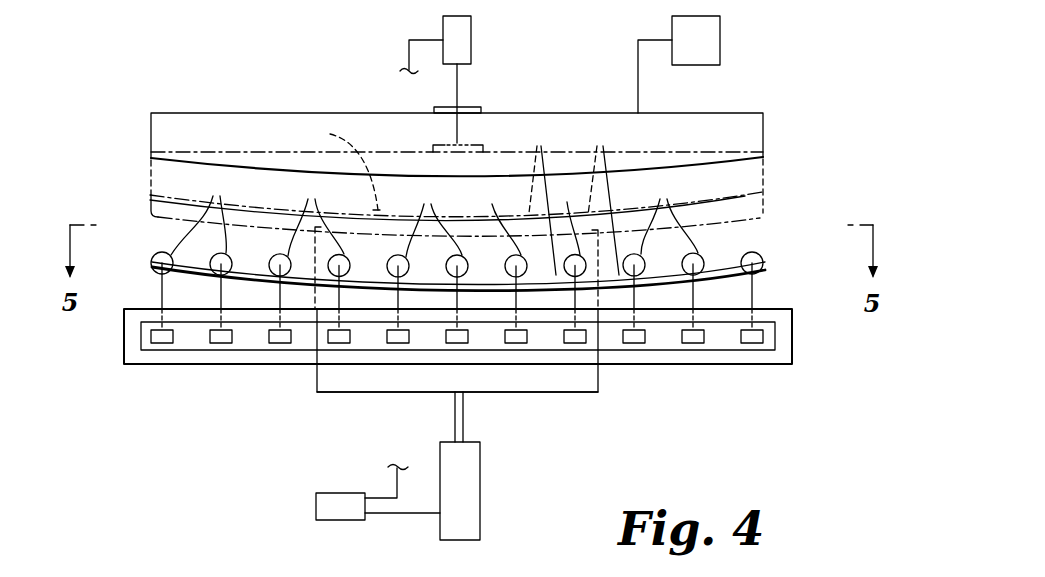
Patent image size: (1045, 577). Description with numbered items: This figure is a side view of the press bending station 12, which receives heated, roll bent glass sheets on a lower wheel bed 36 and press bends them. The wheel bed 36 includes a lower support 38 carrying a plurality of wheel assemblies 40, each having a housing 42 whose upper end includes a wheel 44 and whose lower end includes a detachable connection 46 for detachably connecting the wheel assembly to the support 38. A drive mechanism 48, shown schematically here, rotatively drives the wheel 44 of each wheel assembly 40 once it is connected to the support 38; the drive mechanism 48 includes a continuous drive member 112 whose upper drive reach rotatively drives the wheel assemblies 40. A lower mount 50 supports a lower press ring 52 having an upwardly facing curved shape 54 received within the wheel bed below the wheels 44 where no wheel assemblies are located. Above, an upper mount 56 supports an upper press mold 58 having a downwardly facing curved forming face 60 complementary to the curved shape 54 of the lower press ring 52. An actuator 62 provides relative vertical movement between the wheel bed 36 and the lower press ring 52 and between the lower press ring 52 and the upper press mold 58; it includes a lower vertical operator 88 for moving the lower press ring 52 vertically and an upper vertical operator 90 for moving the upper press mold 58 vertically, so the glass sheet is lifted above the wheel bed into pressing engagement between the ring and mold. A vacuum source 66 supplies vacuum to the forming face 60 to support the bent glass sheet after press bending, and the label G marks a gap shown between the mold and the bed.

The press bending station 12 is at (455, 125).
The wheel bed 36 is at (776, 262).
The lower support 38 is at (131, 375).
The wheel assemblies 40 is at (169, 308).
The housing 42 is at (224, 298).
The wheel 44 is at (434, 216).
The detachable connection 46 is at (158, 344).
The drive mechanism 48 is at (614, 356).
The lower mount 50 is at (333, 394).
The lower press ring 52 is at (542, 200).
The curved shape 54 is at (603, 200).
The upper mount 56 is at (485, 148).
The upper press mold 58 is at (765, 125).
The forming face 60 is at (737, 160).
The actuator 62 is at (306, 502).
The vacuum source 66 is at (720, 36).
The lower vertical operator 88 is at (480, 505).
The upper vertical operator 90 is at (471, 51).
The continuous drive member 112 is at (355, 352).
The gap G is at (344, 168).